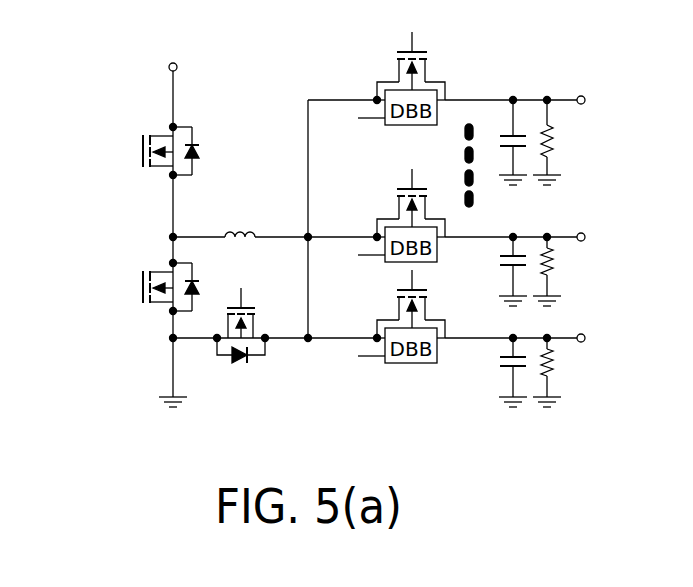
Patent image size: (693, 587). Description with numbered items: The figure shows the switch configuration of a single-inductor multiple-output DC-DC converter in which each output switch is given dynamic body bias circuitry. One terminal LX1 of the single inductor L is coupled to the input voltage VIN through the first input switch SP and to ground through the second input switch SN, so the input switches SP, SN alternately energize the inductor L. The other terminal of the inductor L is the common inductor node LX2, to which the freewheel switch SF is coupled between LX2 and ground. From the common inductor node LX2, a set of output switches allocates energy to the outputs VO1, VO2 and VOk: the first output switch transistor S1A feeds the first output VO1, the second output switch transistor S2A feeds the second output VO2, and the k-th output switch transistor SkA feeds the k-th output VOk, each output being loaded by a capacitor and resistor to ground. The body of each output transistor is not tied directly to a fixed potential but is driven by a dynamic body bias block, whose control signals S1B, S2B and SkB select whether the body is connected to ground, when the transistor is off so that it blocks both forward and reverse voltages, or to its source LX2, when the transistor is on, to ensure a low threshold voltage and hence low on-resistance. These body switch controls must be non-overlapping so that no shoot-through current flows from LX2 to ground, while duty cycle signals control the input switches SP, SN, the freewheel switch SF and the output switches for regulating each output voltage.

The input voltage VIN is at (173, 82).
The first input switch SP is at (143, 152).
The second input switch SN is at (143, 288).
The inductor terminal LX1 is at (151, 219).
The inductor L is at (240, 217).
The common inductor node LX2 is at (288, 221).
The freewheel switch SF is at (240, 313).
The k-th output switch transistor SkA is at (410, 72).
The k-th body switch control signal SkB is at (354, 119).
The second output switch transistor S2A is at (410, 210).
The second body switch control signal S2B is at (354, 255).
The first output switch transistor S1A is at (410, 312).
The first body switch control signal S1B is at (354, 357).
The k-th output VOk is at (537, 137).
The second output VO2 is at (537, 266).
The first output VO1 is at (537, 367).